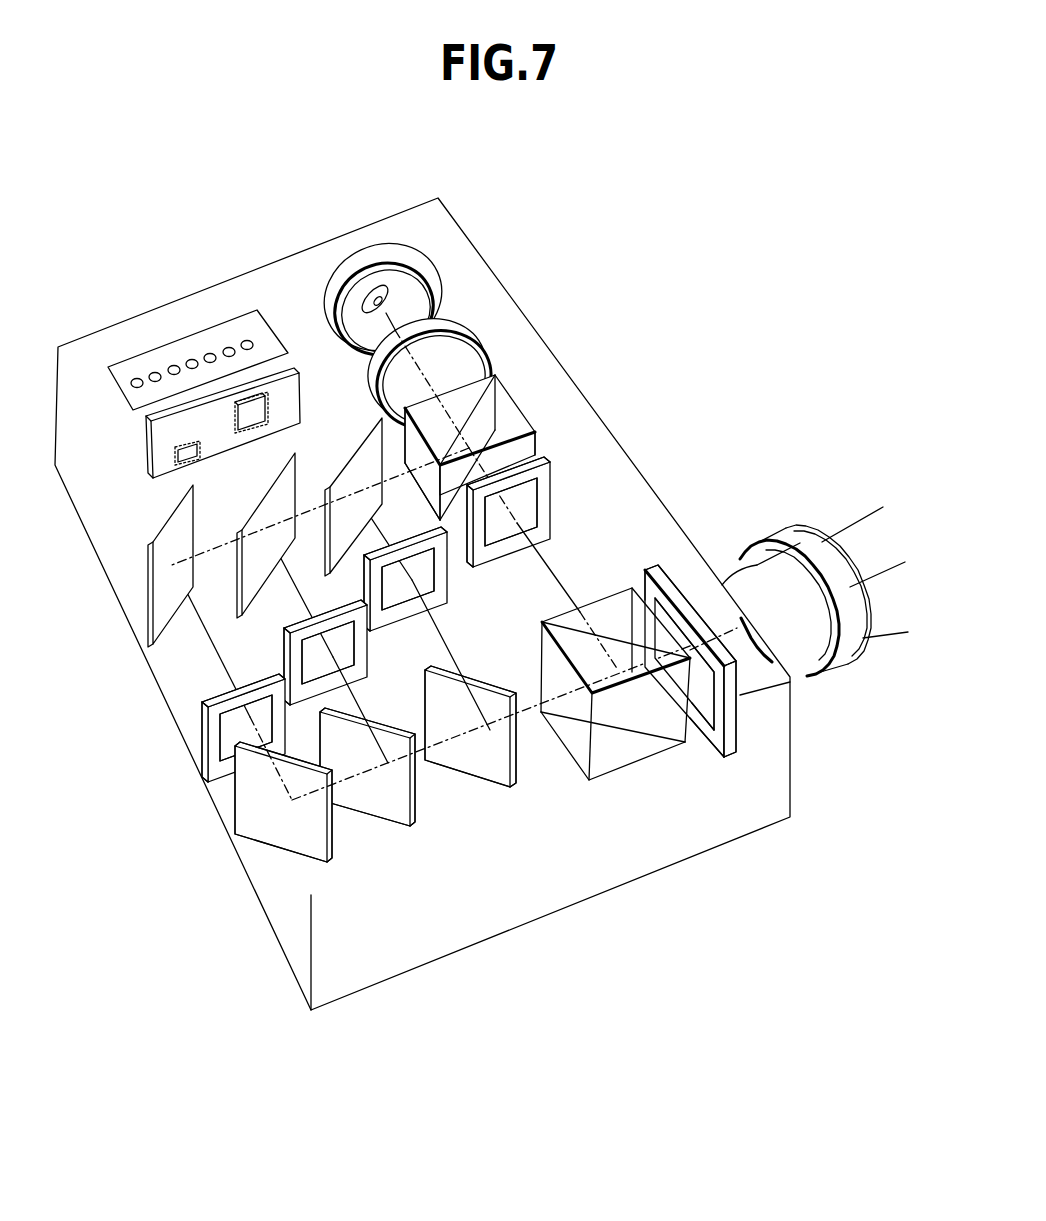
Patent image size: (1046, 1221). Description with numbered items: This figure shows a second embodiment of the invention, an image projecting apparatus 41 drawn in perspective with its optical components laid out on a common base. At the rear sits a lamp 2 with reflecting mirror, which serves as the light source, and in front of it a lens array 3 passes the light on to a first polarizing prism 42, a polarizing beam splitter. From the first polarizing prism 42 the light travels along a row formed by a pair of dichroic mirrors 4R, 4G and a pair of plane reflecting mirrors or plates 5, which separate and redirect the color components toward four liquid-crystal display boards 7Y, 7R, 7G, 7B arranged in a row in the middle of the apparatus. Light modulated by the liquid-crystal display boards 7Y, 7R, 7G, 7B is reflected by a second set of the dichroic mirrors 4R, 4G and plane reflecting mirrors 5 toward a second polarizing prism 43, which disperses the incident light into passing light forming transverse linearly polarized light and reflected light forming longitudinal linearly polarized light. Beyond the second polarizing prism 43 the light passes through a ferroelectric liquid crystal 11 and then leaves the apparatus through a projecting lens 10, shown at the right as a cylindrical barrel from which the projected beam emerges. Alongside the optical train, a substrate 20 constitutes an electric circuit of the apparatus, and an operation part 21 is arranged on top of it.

The lamp with reflecting mirror 2 is at (352, 252).
The lens array 3 is at (458, 352).
The dichroic mirror 4R is at (353, 448).
The dichroic mirror 4G is at (270, 512).
The plane reflecting mirror 5 is at (173, 537).
The liquid-crystal display board 7B is at (227, 693).
The liquid-crystal display board 7G is at (343, 650).
The liquid-crystal display board 7R is at (427, 597).
The liquid-crystal display board 7Y is at (498, 550).
The projecting lens 10 is at (832, 657).
The ferroelectric liquid crystal (FLC) 11 is at (733, 757).
The substrate 20 is at (307, 387).
The operation part 21 is at (272, 327).
The image projecting apparatus 41 is at (495, 273).
The first polarizing prism 42 is at (515, 408).
The second polarizing prism 43 is at (610, 597).